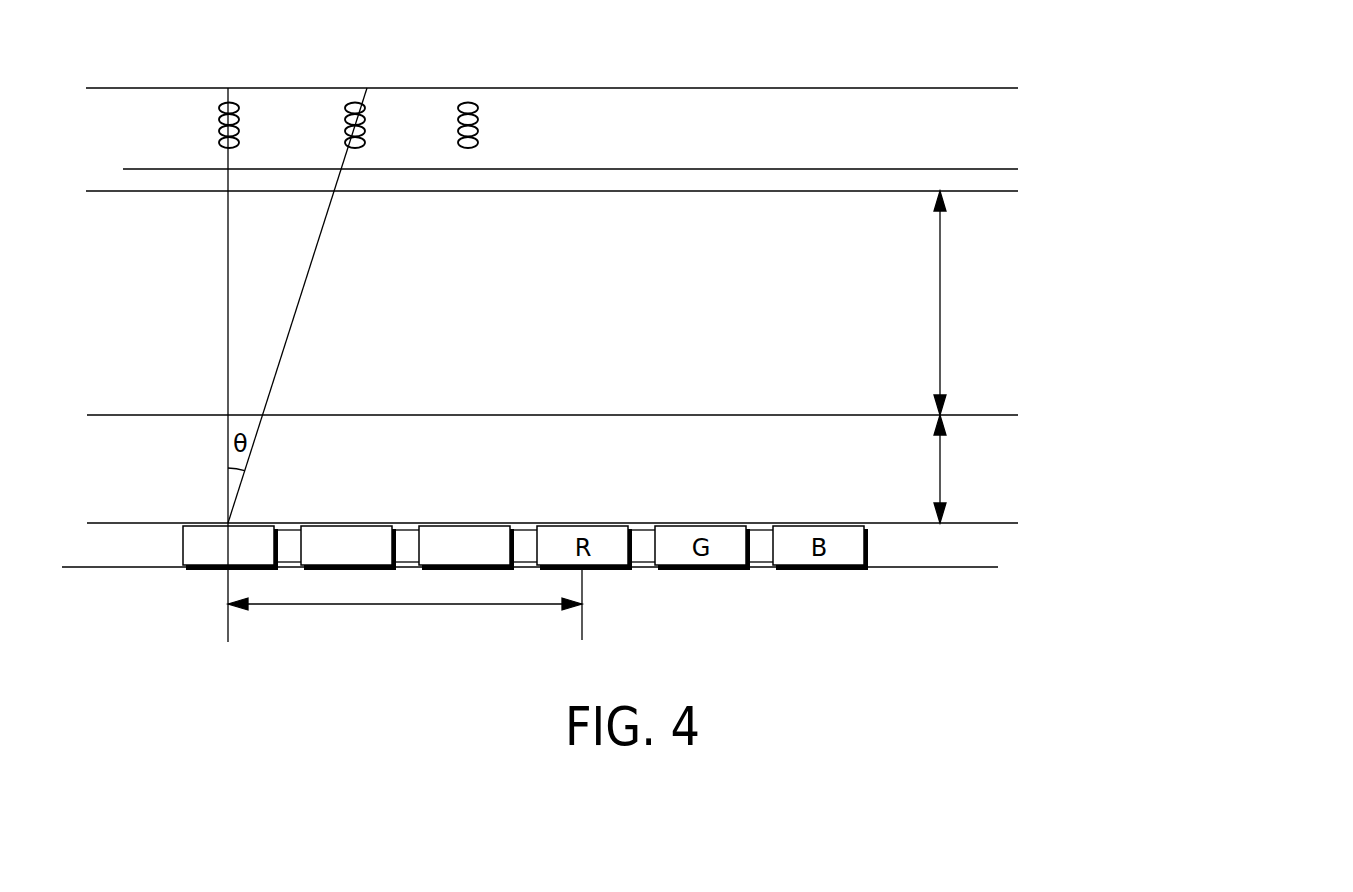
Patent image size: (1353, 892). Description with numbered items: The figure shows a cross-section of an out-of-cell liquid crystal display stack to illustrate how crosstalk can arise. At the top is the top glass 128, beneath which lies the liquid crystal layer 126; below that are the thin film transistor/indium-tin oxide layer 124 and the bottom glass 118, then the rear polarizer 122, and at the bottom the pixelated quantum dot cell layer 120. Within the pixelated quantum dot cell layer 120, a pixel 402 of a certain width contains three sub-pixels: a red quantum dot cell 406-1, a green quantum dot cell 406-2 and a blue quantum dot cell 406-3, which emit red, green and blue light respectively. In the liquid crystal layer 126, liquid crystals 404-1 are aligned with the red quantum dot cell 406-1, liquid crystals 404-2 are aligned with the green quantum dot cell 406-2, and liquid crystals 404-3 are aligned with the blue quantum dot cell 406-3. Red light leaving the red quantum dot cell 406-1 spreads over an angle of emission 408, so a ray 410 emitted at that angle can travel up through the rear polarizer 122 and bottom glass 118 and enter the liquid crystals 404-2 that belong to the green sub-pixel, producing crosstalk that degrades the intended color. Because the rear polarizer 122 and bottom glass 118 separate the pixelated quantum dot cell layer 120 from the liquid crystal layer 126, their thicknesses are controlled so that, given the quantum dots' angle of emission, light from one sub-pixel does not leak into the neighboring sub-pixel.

The top glass 128 is at (1018, 88).
The liquid crystal layer 126 is at (1010, 132).
The thin film transistor (TFT)/indium-tin oxide (ITO) layer 124 is at (1018, 182).
The bottom glass 118 is at (940, 288).
The rear polarizer 122 is at (940, 463).
The pixelated quantum dot cell layer 120 is at (997, 545).
The liquid crystals 404-1 is at (217, 127).
The liquid crystals 404-2 is at (363, 120).
The liquid crystals 404-3 is at (480, 113).
The red quantum dot cell 406-1 is at (183, 545).
The green quantum dot cell 406-2 is at (347, 523).
The blue quantum dot cell 406-3 is at (465, 523).
The angle of emission 408 is at (240, 413).
The light ray 410 is at (322, 230).
The pixel 402 is at (510, 605).